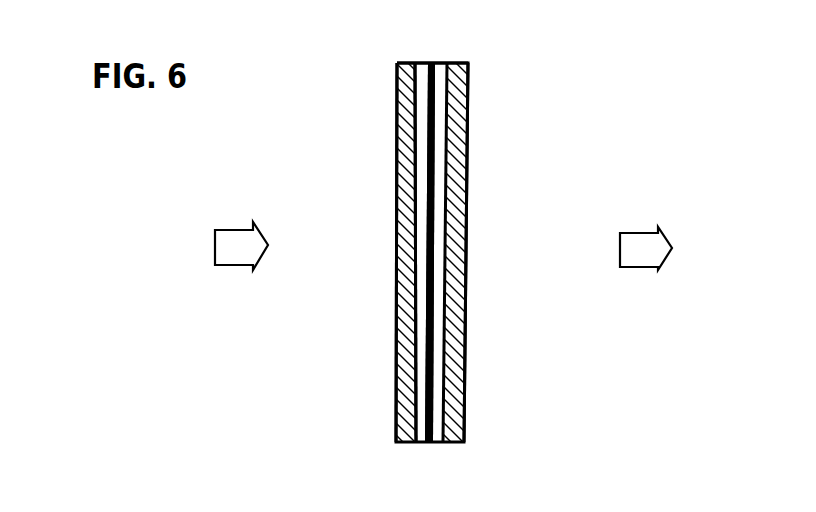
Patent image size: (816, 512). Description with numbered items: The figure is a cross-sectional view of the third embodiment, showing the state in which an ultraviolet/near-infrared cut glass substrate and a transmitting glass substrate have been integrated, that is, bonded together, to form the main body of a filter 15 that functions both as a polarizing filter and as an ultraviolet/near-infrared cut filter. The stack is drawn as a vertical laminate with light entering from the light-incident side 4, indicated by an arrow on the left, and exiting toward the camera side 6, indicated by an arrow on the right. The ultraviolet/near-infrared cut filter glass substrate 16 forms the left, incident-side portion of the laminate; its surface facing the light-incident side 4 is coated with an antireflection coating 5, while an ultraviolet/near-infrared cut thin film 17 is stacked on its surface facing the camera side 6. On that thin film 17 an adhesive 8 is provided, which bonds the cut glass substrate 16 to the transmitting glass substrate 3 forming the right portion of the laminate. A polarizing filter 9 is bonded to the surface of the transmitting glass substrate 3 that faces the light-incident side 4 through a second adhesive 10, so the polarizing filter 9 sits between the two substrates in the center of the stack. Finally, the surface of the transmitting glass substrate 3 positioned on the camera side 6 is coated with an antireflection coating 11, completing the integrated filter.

The transmitting glass substrate 3 is at (463, 31).
The light-incident side 4 is at (234, 275).
The antireflection coating 5 is at (403, 256).
The camera side 6 is at (641, 273).
The adhesive 8 is at (366, 252).
The polarizing filter 9 is at (483, 252).
The adhesive 10 is at (483, 252).
The antireflection coating 11 is at (460, 256).
The main body of a filter 15 is at (479, 238).
The ultraviolet/near-infrared cut filter glass substrate 16 is at (371, 32).
The ultraviolet/near-infrared cut thin film 17 is at (362, 252).